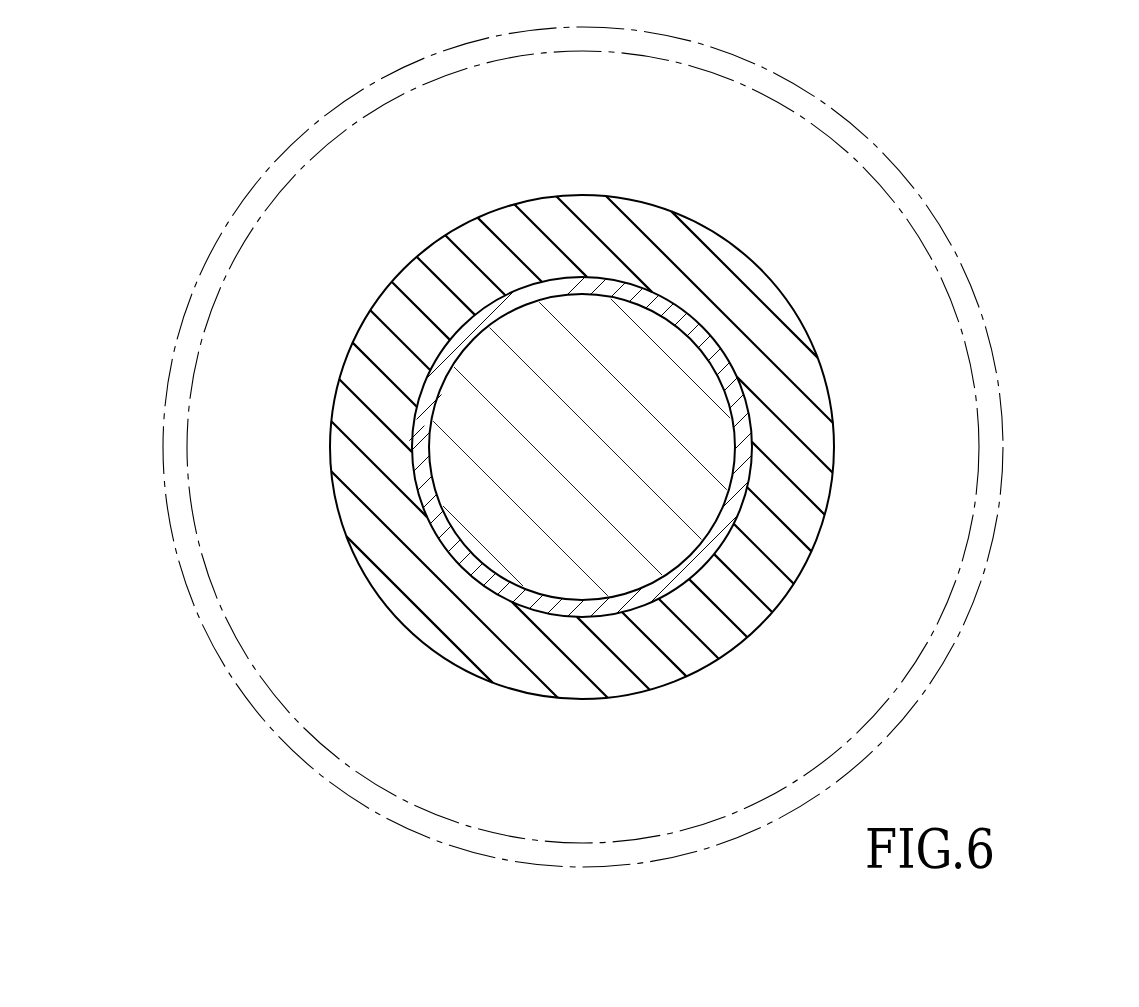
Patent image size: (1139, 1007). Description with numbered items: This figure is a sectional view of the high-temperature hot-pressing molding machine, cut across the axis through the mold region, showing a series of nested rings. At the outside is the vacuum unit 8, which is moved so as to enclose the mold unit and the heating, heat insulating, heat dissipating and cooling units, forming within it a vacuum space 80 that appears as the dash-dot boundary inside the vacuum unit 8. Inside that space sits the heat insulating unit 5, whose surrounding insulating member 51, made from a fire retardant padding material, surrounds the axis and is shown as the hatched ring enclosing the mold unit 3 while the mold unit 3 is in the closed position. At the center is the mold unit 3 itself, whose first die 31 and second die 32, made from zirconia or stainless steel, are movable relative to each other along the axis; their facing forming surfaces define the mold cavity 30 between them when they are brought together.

The vacuum unit 8 is at (857, 150).
The vacuum space 80 is at (303, 206).
The heat insulating unit 5 is at (800, 305).
The surrounding insulating member 51 is at (765, 268).
The mold unit 3 is at (482, 352).
The mold cavity 30 is at (752, 412).
The first die 31 is at (455, 401).
The second die 32 is at (743, 467).